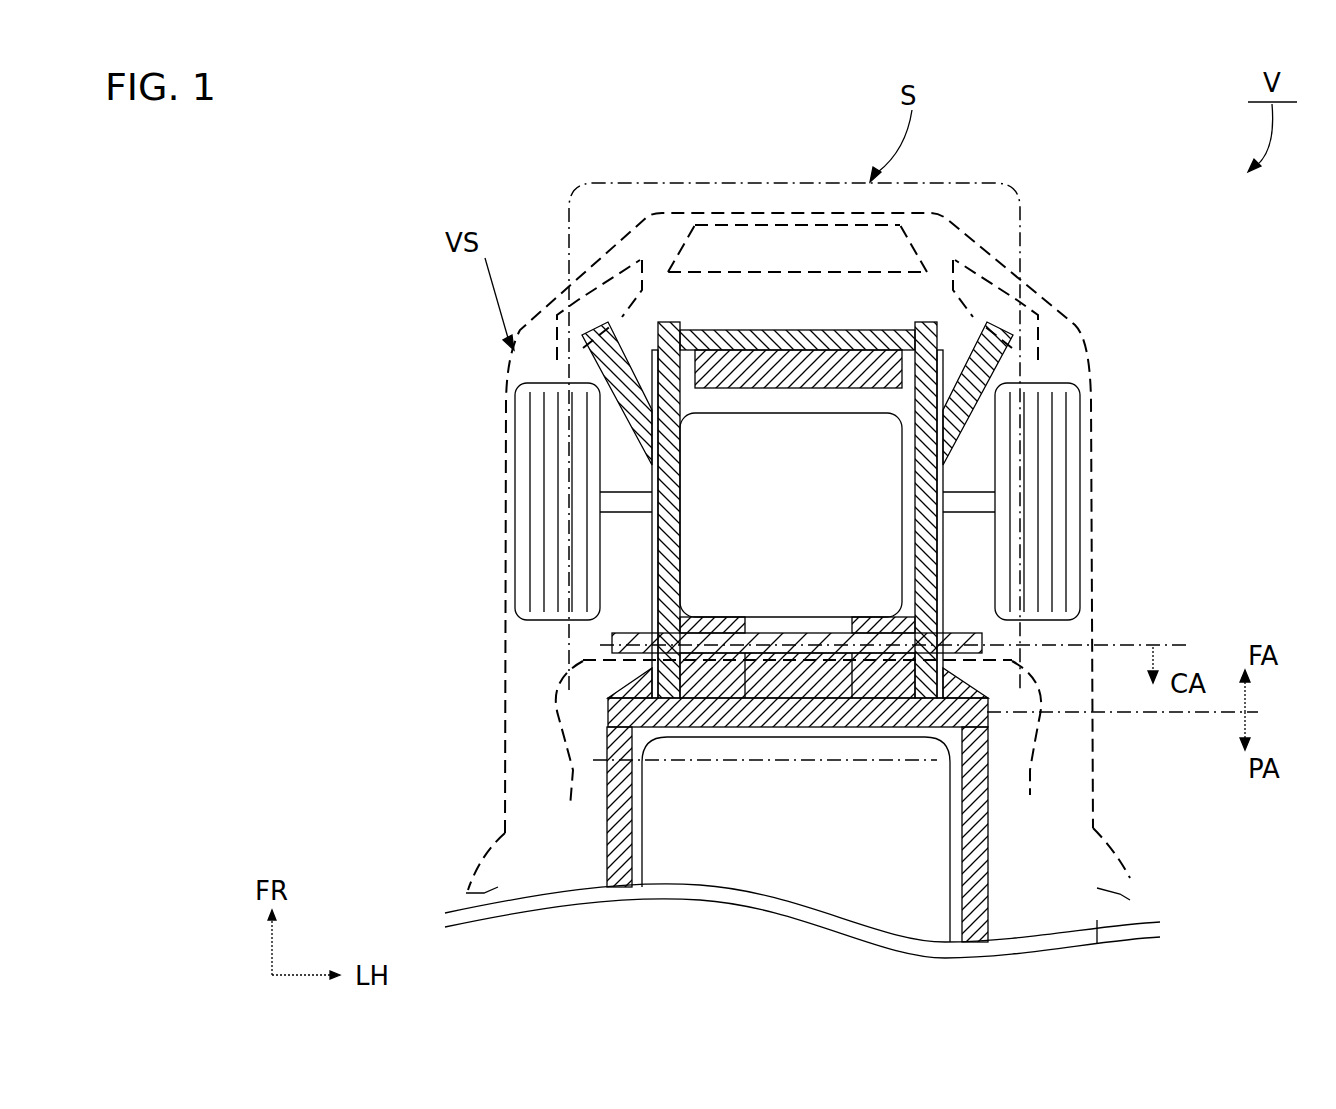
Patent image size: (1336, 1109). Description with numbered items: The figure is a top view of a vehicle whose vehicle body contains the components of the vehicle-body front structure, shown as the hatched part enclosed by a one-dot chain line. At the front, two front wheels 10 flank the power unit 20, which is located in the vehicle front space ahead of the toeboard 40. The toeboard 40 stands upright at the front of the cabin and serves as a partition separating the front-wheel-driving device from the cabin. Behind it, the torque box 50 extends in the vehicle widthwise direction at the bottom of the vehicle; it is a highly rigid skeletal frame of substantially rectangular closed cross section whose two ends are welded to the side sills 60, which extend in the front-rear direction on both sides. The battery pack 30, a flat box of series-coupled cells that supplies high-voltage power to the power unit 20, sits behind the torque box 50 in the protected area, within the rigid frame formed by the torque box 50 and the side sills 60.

The front wheels 10 is at (540, 448).
The power unit 20 is at (680, 517).
The battery pack 30 is at (665, 822).
The toeboard 40 is at (650, 640).
The torque box 50 is at (650, 717).
The side sills 60 is at (640, 838).